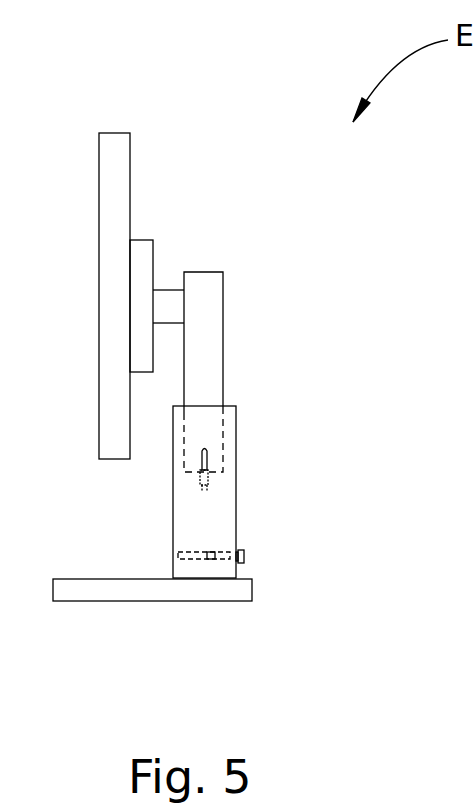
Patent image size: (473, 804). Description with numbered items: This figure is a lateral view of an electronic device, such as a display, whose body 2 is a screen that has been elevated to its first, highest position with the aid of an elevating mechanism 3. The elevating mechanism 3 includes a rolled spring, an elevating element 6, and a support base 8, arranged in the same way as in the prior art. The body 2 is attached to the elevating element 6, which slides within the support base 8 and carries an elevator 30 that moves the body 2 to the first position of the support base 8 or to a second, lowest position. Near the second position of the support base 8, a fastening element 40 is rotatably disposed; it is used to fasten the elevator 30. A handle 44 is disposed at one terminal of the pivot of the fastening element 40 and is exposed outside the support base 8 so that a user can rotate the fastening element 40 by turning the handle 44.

The body 2 is at (117, 178).
The elevating mechanism 3 is at (267, 425).
The elevating element 6 is at (223, 304).
The support base 8 is at (236, 492).
The elevator 30 is at (165, 474).
The fastening element 40 is at (190, 560).
The handle 44 is at (246, 558).